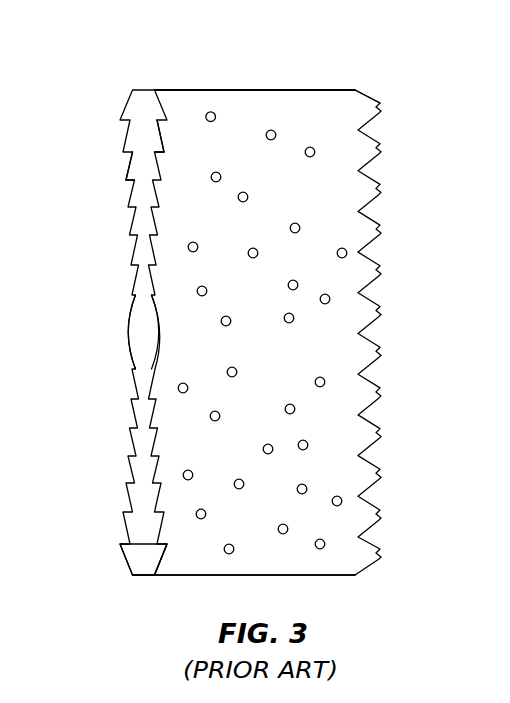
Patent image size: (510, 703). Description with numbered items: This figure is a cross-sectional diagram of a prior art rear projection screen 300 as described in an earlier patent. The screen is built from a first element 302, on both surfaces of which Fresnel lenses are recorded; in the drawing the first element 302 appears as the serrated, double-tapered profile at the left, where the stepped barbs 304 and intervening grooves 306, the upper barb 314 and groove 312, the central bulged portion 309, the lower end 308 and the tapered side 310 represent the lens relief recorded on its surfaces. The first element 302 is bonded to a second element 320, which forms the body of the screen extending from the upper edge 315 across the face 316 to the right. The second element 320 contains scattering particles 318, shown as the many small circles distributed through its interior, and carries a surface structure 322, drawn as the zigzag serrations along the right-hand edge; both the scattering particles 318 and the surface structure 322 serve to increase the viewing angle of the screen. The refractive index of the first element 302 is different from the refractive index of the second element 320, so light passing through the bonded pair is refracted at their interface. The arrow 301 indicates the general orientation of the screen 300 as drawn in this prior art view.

The prior art fastener assembly 300 is at (270, 50).
The insertion direction arrow 301 is at (94, 389).
The first element 302 is at (121, 547).
The barb 304 is at (129, 178).
The groove 306 is at (129, 182).
The base end 308 is at (145, 577).
The flexible central portion 309 is at (145, 257).
The tapered side 310 is at (165, 551).
The groove 312 is at (156, 149).
The barb 314 is at (158, 122).
The top edge 315 is at (220, 90).
The body panel 316 is at (277, 103).
The scattering particles 318 is at (283, 534).
The second element 320 is at (368, 97).
The surface structure 322 is at (382, 148).